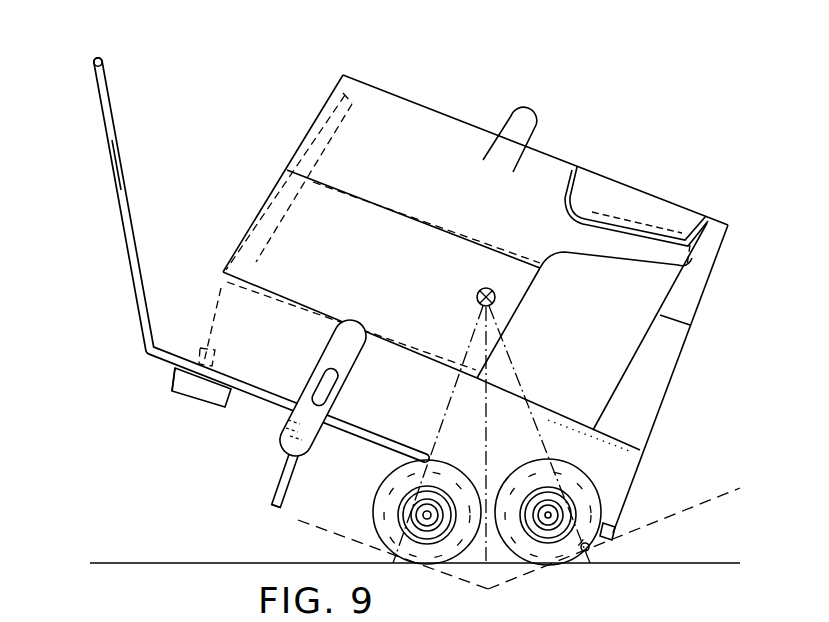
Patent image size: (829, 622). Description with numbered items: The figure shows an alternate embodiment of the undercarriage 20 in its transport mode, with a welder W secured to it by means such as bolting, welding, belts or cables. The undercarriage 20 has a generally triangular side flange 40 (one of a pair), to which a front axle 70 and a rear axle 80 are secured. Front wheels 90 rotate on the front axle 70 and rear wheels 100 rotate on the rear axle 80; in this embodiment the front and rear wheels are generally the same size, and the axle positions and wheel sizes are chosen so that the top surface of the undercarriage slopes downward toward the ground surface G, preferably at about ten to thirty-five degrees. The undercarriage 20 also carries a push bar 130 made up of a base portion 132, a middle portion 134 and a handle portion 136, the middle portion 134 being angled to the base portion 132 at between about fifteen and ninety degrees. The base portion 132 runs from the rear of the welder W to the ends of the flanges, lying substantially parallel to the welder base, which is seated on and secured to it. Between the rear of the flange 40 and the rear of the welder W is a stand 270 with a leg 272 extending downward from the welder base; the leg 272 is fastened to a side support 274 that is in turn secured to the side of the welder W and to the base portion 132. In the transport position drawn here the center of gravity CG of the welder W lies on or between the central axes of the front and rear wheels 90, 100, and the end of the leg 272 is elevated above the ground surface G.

The undercarriage 20 is at (160, 386).
The side flange 40 is at (484, 471).
The front axle 70 is at (560, 507).
The rear axle 80 is at (402, 497).
The front wheels 90 is at (583, 482).
The rear wheels 100 is at (380, 507).
The push bar 130 is at (107, 142).
The base portion 132 is at (248, 396).
The middle portion 134 is at (121, 214).
The handle portion 136 is at (103, 57).
The stand 270 is at (282, 472).
The leg 272 is at (272, 497).
The side support 274 is at (332, 353).
The welder W is at (411, 109).
The center of gravity CG is at (491, 413).
The ground surface G is at (187, 562).